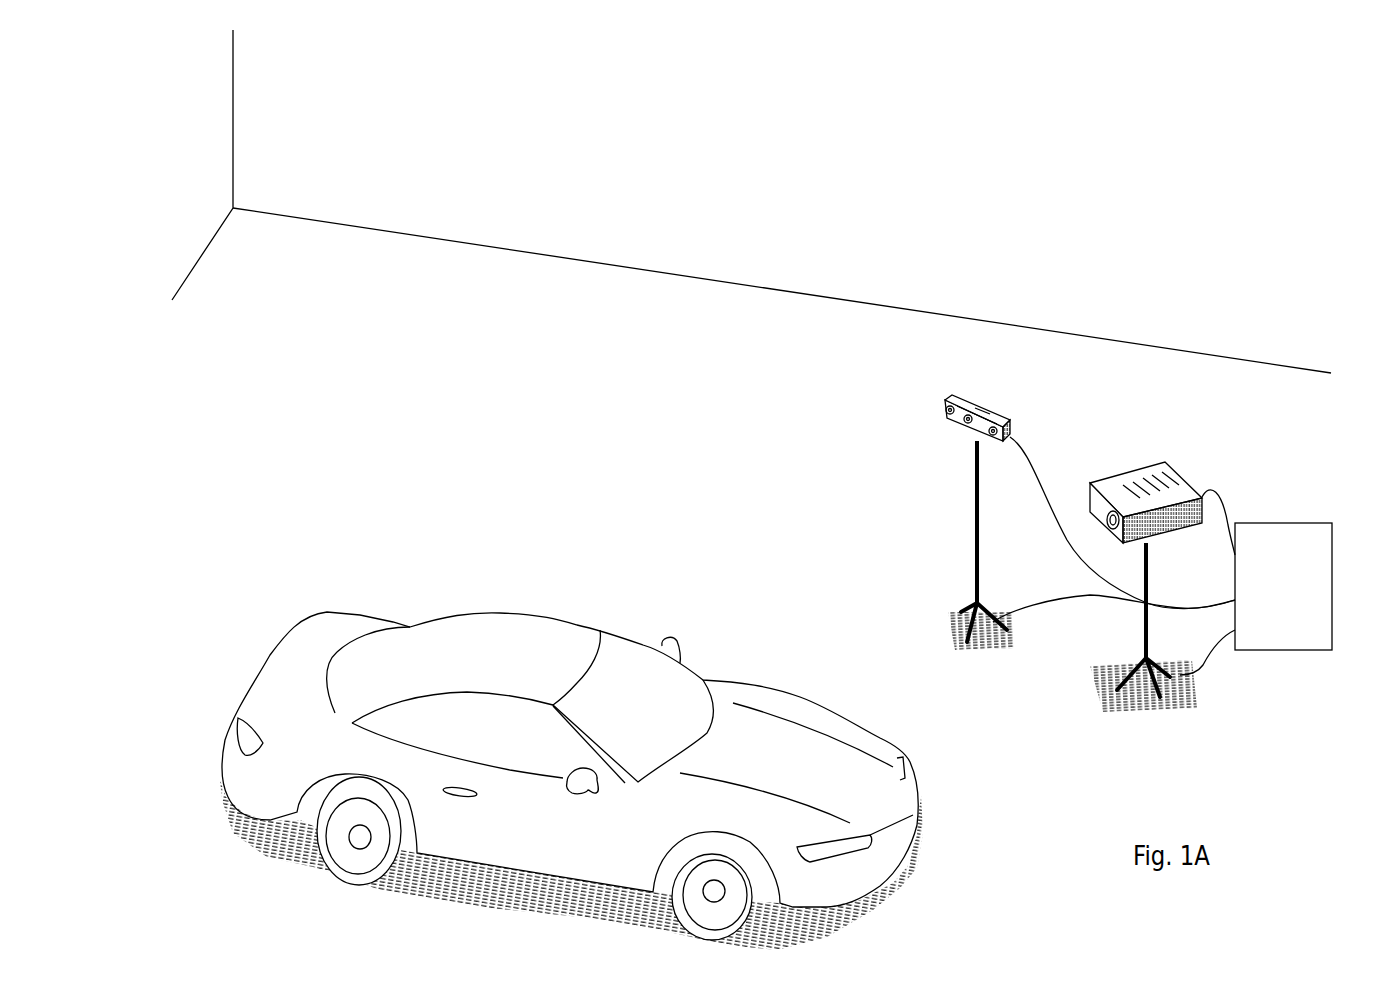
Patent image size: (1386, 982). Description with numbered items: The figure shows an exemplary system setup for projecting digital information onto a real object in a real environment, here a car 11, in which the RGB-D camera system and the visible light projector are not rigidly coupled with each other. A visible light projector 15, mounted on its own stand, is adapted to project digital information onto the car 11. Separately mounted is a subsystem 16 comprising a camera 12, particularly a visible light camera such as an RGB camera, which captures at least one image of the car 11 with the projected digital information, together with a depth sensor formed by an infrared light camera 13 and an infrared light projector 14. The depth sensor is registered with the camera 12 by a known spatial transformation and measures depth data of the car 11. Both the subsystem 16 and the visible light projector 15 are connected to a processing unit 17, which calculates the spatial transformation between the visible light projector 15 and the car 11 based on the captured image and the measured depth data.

The car 11 is at (647, 710).
The camera 12 is at (948, 398).
The infrared light camera 13 is at (968, 412).
The infrared light projector 14 is at (993, 425).
The visible light projector 15 is at (1113, 492).
The subsystem 16 is at (982, 407).
The processing unit 17 is at (1283, 586).